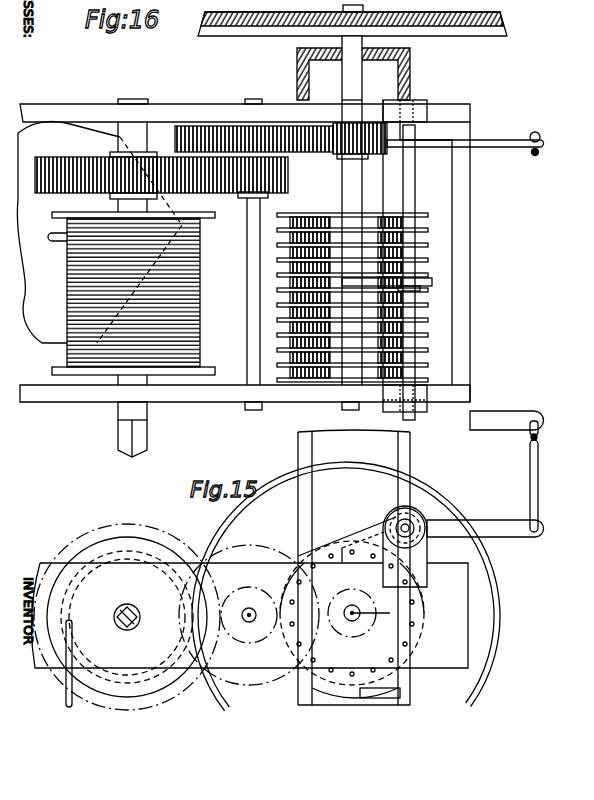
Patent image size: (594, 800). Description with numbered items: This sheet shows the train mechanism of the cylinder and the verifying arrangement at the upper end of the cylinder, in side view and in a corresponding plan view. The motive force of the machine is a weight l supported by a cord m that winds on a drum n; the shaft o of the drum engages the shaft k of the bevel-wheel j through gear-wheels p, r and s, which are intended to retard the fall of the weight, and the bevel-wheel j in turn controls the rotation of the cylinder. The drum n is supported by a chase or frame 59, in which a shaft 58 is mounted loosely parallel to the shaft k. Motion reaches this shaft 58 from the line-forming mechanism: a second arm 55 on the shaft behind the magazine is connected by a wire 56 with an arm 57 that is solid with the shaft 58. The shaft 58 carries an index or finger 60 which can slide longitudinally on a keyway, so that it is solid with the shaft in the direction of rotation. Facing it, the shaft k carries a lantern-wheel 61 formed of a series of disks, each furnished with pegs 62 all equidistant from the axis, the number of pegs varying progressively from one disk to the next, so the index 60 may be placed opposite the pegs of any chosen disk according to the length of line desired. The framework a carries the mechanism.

In FIG. 15, the second arm 55 is at (493, 422).
In FIG. 16, the wire 56 is at (536, 153).
In FIG. 15, the wire 56 is at (530, 466).
In FIG. 16, the arm 57 is at (514, 148).
In FIG. 15, the arm 57 is at (526, 538).
In FIG. 16, the shaft 58 is at (417, 183).
In FIG. 15, the shaft 58 is at (408, 527).
In FIG. 16, the chase or frame 59 is at (163, 106).
In FIG. 16, the index or finger 60 is at (418, 272).
In FIG. 15, the index or finger 60 is at (366, 528).
In FIG. 16, the lantern-wheel 61 is at (352, 297).
In FIG. 15, the lantern-wheel 61 is at (400, 693).
In FIG. 16, the pegs 62 is at (288, 250).
In FIG. 15, the pegs 62 is at (414, 614).
In FIG. 16, the framework a is at (298, 66).
In FIG. 15, the framework a is at (298, 448).
In FIG. 16, the gear g is at (289, 181).
In FIG. 15, the gear g is at (249, 593).
In FIG. 15, the bevel-wheel j is at (491, 665).
In FIG. 16, the shaft k is at (362, 82).
In FIG. 15, the shaft k is at (367, 628).
In FIG. 16, the weight l is at (47, 345).
In FIG. 16, the cord m is at (67, 287).
In FIG. 15, the cord m is at (66, 697).
In FIG. 16, the drum n is at (133, 293).
In FIG. 15, the drum n is at (101, 550).
In FIG. 16, the shaft o is at (125, 204).
In FIG. 15, the shaft o is at (133, 627).
In FIG. 16, the gear-wheel p is at (35, 182).
In FIG. 15, the gear-wheel p is at (75, 541).
In FIG. 16, the gear-wheel r is at (176, 136).
In FIG. 15, the gear-wheel r is at (243, 543).
In FIG. 16, the gear-wheel s is at (374, 155).
In FIG. 15, the gear-wheel s is at (350, 594).